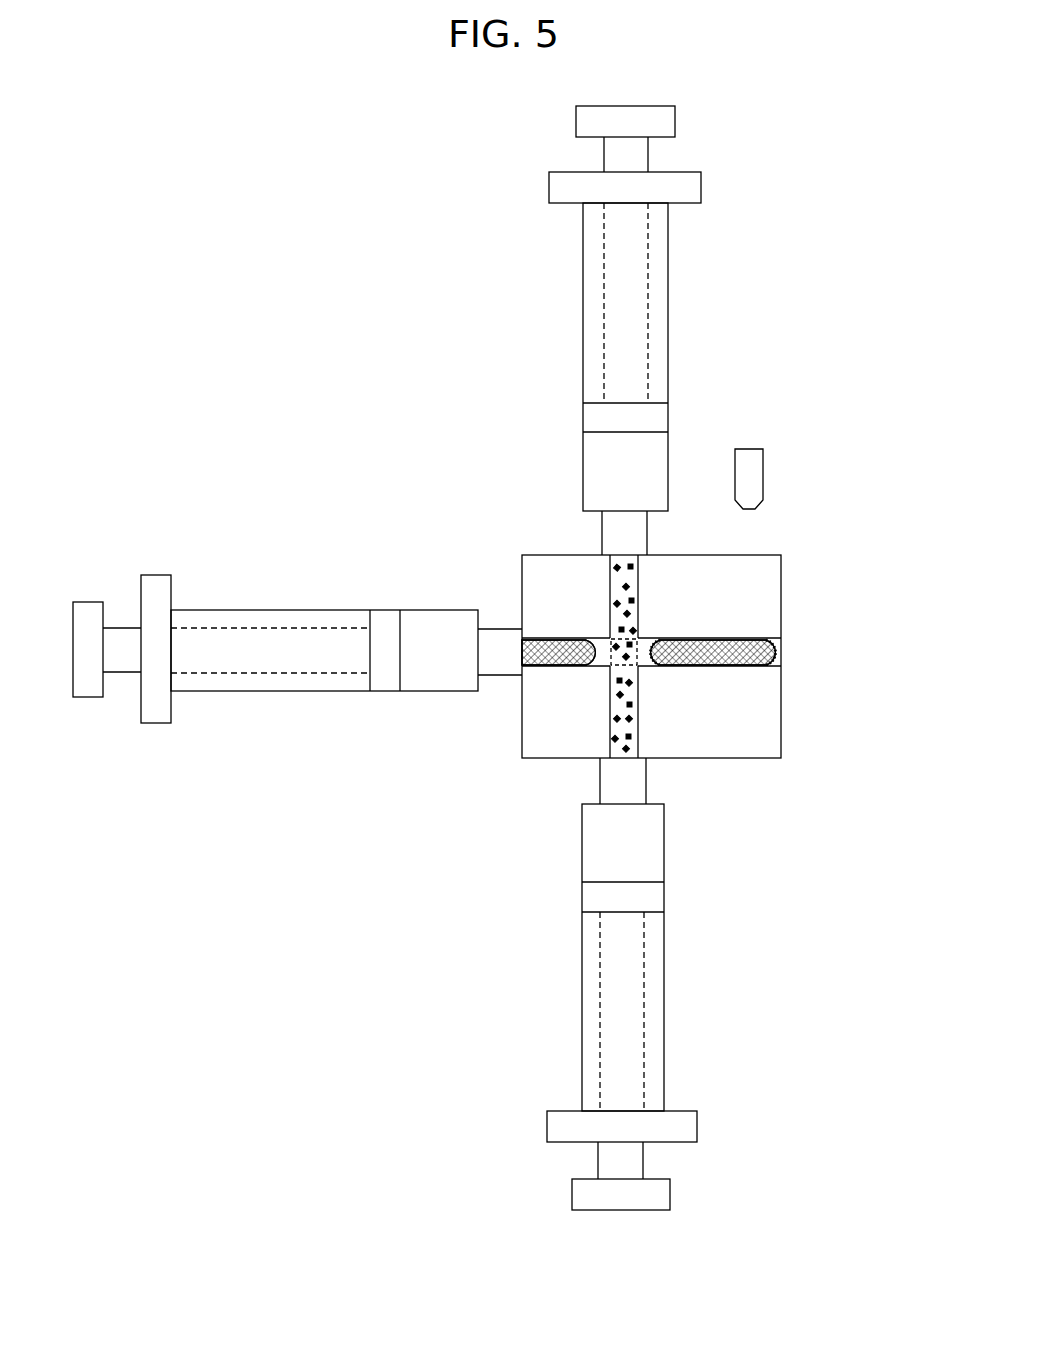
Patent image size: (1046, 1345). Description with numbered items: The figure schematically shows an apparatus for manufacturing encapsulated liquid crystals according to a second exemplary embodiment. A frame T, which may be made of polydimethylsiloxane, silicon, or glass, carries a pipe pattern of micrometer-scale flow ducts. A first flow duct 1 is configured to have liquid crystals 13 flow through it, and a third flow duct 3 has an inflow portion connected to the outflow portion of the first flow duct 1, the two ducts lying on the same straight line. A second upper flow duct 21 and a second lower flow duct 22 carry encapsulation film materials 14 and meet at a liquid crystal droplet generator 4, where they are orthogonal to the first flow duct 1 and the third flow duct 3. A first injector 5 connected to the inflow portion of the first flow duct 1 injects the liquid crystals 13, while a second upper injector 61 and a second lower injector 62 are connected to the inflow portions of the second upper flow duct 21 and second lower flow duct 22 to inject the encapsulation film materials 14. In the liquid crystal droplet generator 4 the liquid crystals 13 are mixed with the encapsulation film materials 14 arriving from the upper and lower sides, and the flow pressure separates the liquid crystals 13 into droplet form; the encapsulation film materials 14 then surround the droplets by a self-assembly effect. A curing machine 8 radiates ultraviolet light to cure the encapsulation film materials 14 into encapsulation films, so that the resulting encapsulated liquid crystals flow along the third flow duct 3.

The frame T is at (773, 578).
The first flow duct 1 is at (600, 637).
The third flow duct 3 is at (645, 638).
The liquid crystal droplet generator 4 is at (622, 655).
The first injector 5 is at (260, 691).
The curing machine 8 is at (765, 458).
The liquid crystals 13 is at (543, 667).
The encapsulation film materials 14 is at (640, 684).
The second upper flow duct 21 is at (610, 572).
The second lower flow duct 22 is at (640, 732).
The second upper injector 61 is at (668, 383).
The second lower injector 62 is at (664, 968).